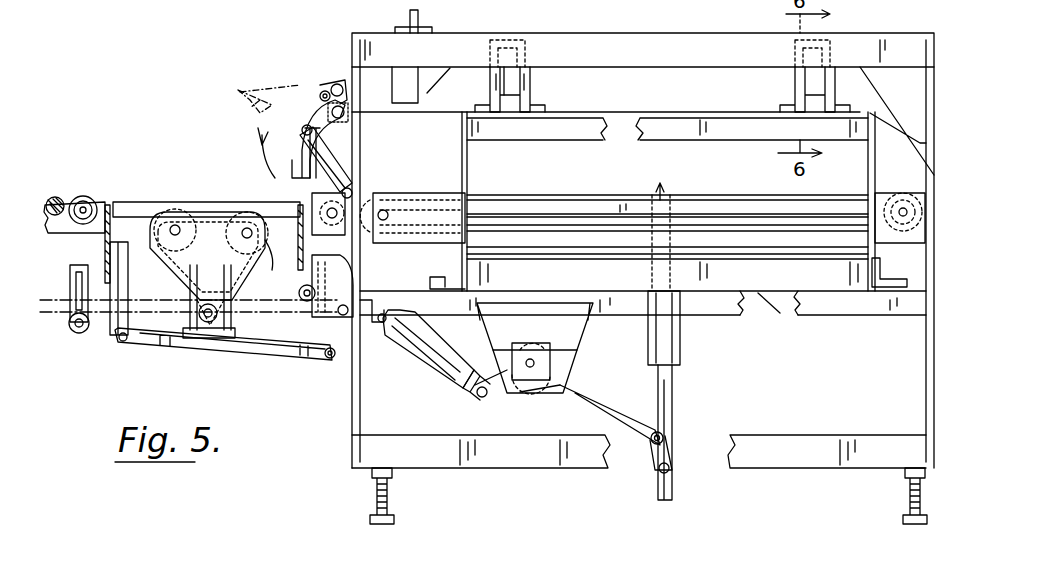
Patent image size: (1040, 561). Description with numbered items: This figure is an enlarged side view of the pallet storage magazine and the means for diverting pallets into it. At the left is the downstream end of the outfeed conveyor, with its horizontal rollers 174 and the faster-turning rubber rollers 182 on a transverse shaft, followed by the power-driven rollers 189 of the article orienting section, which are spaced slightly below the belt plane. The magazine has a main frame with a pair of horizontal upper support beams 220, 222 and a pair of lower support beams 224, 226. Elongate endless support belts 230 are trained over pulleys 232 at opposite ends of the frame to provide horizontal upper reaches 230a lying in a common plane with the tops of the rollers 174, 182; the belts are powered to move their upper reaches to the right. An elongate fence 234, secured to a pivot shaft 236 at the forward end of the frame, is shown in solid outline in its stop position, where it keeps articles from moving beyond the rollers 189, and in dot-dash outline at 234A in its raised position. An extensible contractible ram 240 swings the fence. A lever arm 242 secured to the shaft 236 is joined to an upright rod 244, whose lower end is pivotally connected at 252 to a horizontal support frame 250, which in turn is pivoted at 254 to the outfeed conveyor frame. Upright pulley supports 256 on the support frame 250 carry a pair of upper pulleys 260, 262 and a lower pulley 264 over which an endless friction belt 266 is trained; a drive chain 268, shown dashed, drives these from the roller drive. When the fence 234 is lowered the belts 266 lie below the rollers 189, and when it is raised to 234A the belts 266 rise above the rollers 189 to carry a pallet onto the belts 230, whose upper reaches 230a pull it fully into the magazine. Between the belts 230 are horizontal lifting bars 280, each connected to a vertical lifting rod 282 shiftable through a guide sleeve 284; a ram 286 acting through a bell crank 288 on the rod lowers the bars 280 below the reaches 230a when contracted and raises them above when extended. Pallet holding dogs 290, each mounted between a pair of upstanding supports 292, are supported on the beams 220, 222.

The rollers 174 is at (53, 196).
The rubber rollers 182 is at (85, 196).
The power-driven rollers 189 is at (128, 200).
The upper support beam 220 is at (675, 135).
The upper support beam 222 is at (622, 130).
The lower support beam 224 is at (842, 318).
The lower support beam 226 is at (764, 313).
The endless support belt 230 is at (595, 195).
The upper reach 230a is at (530, 205).
The pulleys 232 is at (900, 195).
The fence 234 is at (285, 178).
The raised position of fence 234A is at (232, 85).
The pivot shaft 236 is at (345, 112).
The extensible contractible ram 240 is at (348, 160).
The lever arm 242 is at (322, 90).
The upright rod 244 is at (325, 140).
The support frame 250 is at (245, 356).
The pivotal connection 252 is at (330, 360).
The pivot point 254 is at (120, 342).
The pulley support 256 is at (225, 255).
The upright pulley 260 is at (173, 208).
The upright pulley 262 is at (270, 268).
The pulley 264 is at (206, 302).
The friction belt 266 is at (242, 210).
The drive chain 268 is at (100, 333).
The lifting bars 280 is at (718, 210).
The lifting rod 282 is at (667, 390).
The guide sleeve 284 is at (678, 333).
The extensible-contractible ram 286 is at (420, 360).
The bell crank 288 is at (578, 378).
The pallet holding dogs 290 is at (800, 78).
The upstanding supports 292 is at (830, 96).